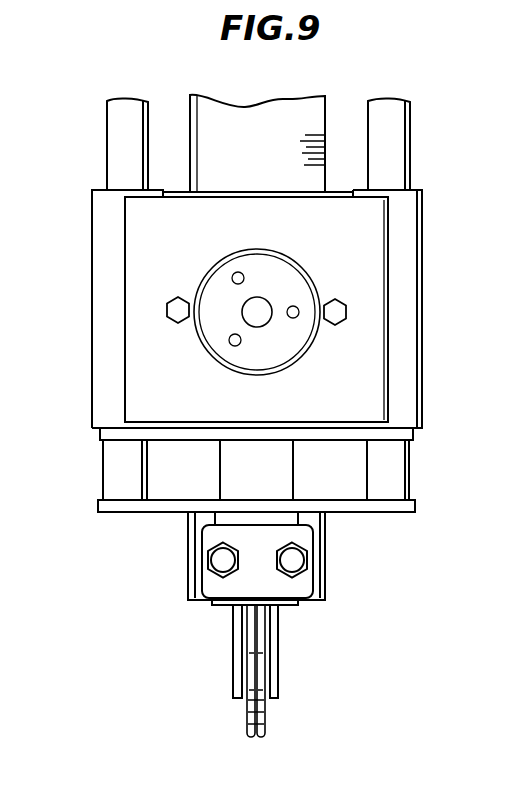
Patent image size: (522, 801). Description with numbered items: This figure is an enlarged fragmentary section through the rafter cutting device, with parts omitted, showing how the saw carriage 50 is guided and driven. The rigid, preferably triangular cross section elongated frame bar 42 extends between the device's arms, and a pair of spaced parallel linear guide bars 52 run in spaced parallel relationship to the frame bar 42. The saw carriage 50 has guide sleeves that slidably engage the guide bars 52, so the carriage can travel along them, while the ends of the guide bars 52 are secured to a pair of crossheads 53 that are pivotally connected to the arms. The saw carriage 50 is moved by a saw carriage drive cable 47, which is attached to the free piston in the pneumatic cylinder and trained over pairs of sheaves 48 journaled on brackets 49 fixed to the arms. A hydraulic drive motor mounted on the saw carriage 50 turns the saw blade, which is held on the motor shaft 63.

The frame bar 42 is at (278, 108).
The linear guide bars 52 is at (118, 118).
The saw carriage 50 is at (296, 309).
The motor shaft 63 is at (262, 302).
The crossheads 53 is at (371, 506).
The saw carriage drive cable 47 is at (250, 632).
The brackets 49 is at (280, 635).
The sheaves 48 is at (266, 718).